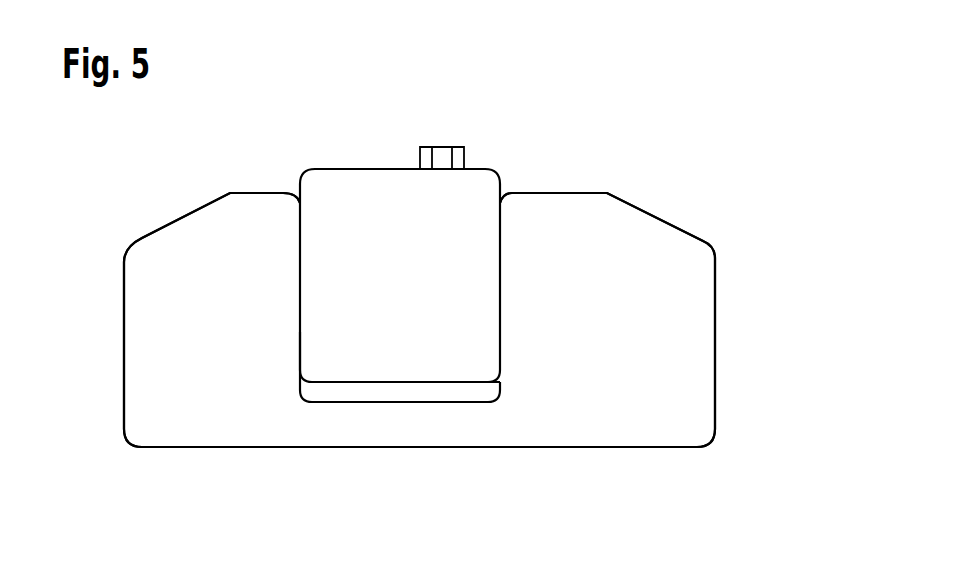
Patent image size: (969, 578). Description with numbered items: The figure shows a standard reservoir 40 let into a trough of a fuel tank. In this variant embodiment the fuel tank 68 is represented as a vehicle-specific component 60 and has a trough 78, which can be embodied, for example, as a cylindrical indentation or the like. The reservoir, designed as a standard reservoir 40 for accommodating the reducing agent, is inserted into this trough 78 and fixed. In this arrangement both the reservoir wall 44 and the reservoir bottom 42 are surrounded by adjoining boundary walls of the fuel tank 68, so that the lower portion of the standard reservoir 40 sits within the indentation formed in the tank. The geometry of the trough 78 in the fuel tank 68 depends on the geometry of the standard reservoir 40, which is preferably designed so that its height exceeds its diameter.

The standard reservoir 40 is at (343, 164).
The reservoir bottom 42 is at (443, 382).
The reservoir wall 44 is at (300, 332).
The vehicle-specific component 60 is at (630, 190).
The fuel tank 68 is at (419, 320).
The trough 78 is at (420, 395).